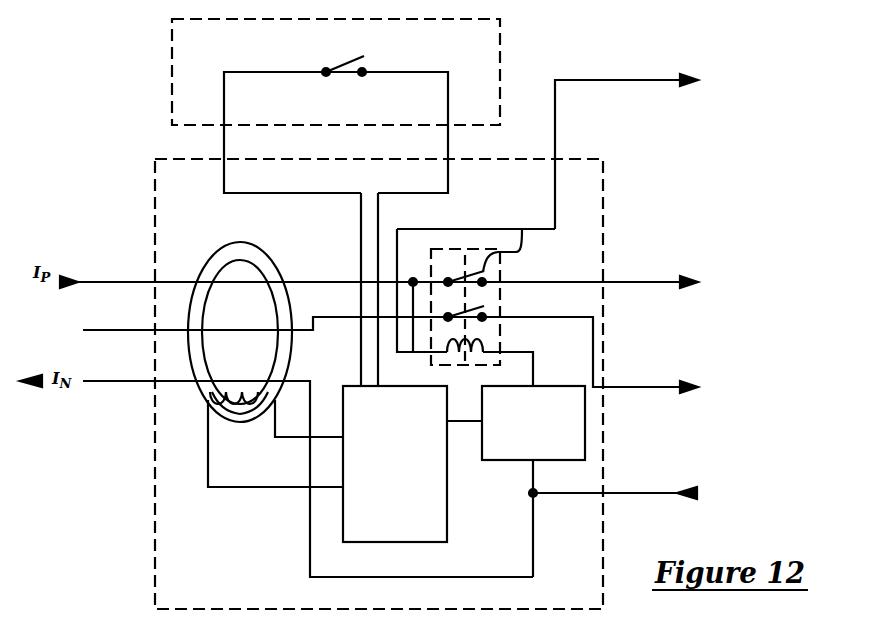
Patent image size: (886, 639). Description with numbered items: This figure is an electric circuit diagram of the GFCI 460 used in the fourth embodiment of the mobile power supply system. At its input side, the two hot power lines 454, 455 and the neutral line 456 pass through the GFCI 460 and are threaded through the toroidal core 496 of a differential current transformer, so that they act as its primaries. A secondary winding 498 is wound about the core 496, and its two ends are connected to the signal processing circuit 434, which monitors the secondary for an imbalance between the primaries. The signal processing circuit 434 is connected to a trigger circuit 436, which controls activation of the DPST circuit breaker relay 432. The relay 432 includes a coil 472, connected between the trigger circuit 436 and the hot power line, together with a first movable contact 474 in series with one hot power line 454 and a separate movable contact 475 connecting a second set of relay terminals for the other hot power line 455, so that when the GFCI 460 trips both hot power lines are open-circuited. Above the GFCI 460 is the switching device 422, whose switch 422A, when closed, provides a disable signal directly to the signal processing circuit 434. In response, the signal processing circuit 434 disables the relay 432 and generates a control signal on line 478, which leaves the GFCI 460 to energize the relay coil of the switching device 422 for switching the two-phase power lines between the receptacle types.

The switching device 422 is at (172, 58).
The switch 422A is at (358, 58).
The GFCI 460 is at (309, 159).
The line 478 is at (622, 80).
The first movable contact 474 is at (476, 278).
The DPST circuit breaker relay 432 is at (466, 249).
The separate movable contact 475 is at (462, 312).
The coil 472 is at (431, 362).
The toroidal core 496 is at (233, 243).
The secondary winding 498 is at (202, 400).
The signal processing circuit 434 is at (447, 478).
The trigger circuit 436 is at (567, 386).
The hot power line 454 is at (115, 282).
The hot power line 455 is at (90, 330).
The neutral line 456 is at (90, 381).